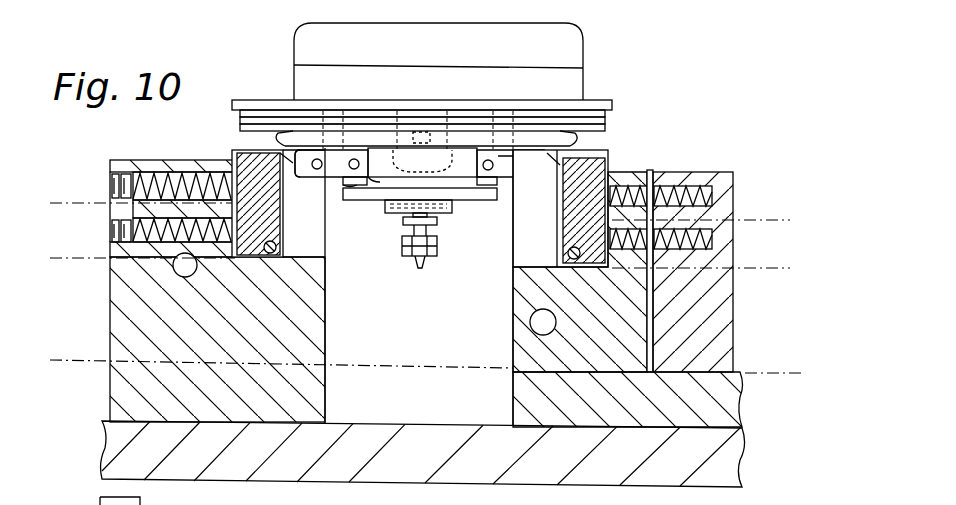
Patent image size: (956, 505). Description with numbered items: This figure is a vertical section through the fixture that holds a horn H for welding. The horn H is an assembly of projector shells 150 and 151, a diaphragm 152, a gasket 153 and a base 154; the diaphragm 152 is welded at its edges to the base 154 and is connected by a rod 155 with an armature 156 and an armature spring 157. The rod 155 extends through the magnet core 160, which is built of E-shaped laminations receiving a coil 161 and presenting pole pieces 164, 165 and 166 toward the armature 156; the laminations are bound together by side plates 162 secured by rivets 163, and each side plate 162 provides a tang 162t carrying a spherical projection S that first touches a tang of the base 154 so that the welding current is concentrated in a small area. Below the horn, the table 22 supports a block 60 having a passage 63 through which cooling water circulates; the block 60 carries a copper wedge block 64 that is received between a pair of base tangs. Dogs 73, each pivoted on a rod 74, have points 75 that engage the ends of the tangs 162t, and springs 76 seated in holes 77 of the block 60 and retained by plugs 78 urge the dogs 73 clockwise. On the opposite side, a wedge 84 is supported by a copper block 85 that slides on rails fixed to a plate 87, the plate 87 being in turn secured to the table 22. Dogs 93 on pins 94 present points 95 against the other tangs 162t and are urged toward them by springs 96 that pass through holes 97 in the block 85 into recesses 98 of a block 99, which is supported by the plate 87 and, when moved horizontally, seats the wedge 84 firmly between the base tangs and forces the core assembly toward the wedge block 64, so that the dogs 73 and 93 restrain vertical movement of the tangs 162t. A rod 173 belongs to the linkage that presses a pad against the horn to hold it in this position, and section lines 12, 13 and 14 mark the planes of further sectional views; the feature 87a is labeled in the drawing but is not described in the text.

The horn H is at (481, 21).
The projector shell 150 is at (585, 45).
The projector shell 151 is at (588, 102).
The diaphragm 152 is at (610, 114).
The gasket 153 is at (607, 121).
The base 154 is at (607, 130).
The magnet core 160 is at (455, 172).
The coil 161 is at (383, 153).
The side plate 162 is at (357, 150).
The tang 162t is at (307, 152).
The rivet 163 is at (488, 157).
The pole piece 164 is at (387, 160).
The pole piece 165 is at (367, 185).
The pole piece 166 is at (497, 182).
The spherical projection S is at (318, 160).
The rod 155 is at (419, 262).
The armature 156 is at (473, 200).
The armature spring 157 is at (445, 212).
The block 60 is at (110, 313).
The passage 63 is at (174, 260).
The copper wedge block 64 is at (326, 232).
The dog 73 is at (283, 210).
The rod 74 is at (278, 247).
The tooth or point 75 is at (294, 162).
The spring 76 is at (205, 182).
The hole 77 is at (152, 183).
The plug 78 is at (113, 180).
The wedge 84 is at (513, 244).
The copper block 85 is at (513, 300).
The plate 87 is at (513, 396).
The bore 87a is at (531, 328).
The dog 93 is at (563, 237).
The pin 94 is at (565, 255).
The point 95 is at (548, 163).
The spring 96 is at (620, 185).
The hole 97 is at (650, 172).
The recess 98 is at (677, 187).
The block 99 is at (710, 174).
The table 22 is at (426, 424).
The section line 12 is at (52, 204).
The section line 13 is at (52, 259).
The section line 14 is at (52, 361).
The rod 173 is at (190, 498).